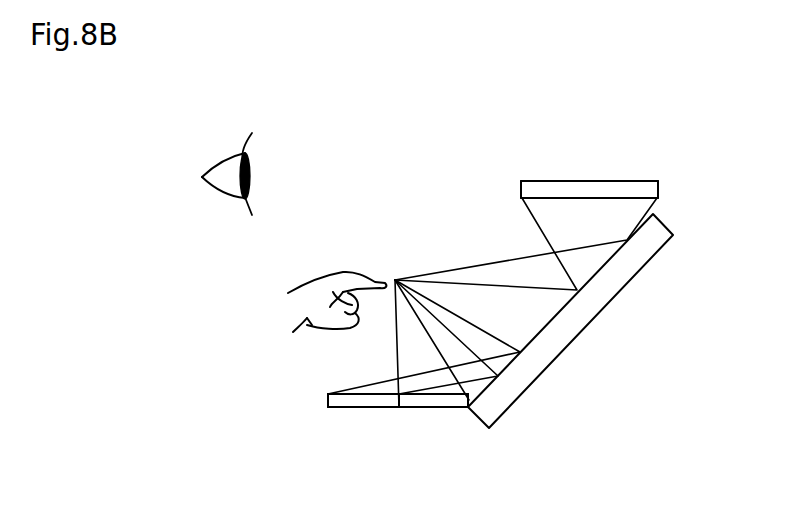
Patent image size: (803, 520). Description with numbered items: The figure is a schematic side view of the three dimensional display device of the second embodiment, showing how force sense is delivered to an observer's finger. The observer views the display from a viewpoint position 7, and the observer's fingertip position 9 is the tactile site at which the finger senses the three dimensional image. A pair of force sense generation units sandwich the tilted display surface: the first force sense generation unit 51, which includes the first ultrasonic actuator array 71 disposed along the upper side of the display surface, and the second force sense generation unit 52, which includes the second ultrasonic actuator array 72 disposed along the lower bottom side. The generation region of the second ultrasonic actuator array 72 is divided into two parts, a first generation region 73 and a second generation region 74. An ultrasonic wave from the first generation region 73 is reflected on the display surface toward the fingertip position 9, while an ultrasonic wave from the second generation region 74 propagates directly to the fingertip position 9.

The observer's viewpoint position 7 is at (245, 152).
The fingertip position 9 is at (377, 273).
The first force sense generation unit 51 is at (643, 185).
The second force sense generation unit 52 is at (328, 400).
The first ultrasonic actuator array 71 is at (580, 179).
The second ultrasonic actuator array 72 is at (398, 449).
The first generation region 73 is at (357, 401).
The second generation region 74 is at (433, 426).